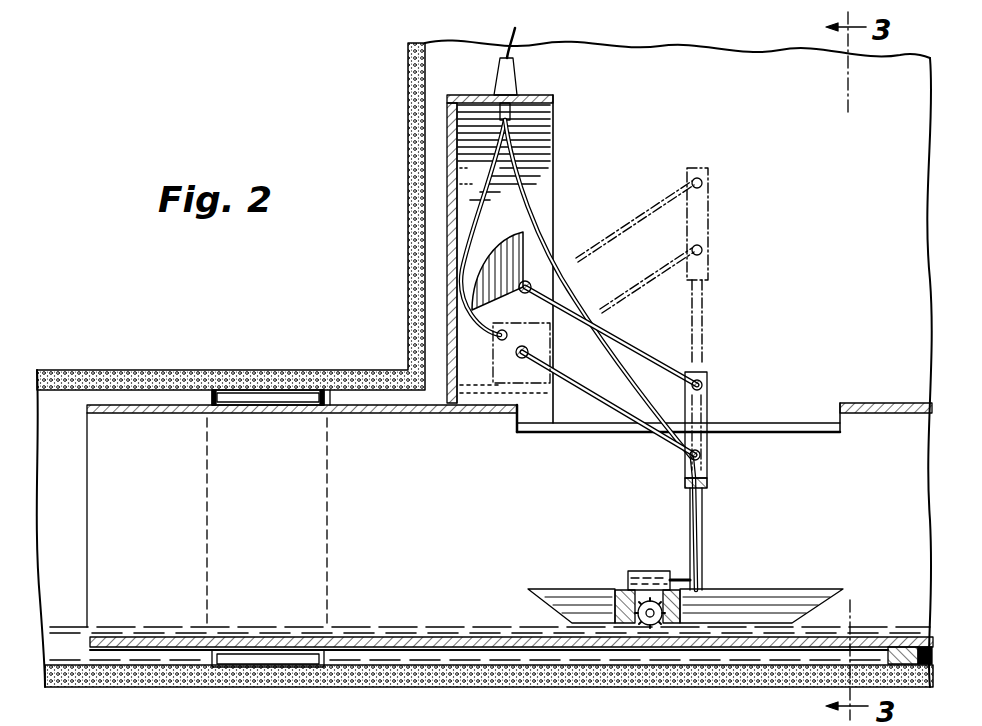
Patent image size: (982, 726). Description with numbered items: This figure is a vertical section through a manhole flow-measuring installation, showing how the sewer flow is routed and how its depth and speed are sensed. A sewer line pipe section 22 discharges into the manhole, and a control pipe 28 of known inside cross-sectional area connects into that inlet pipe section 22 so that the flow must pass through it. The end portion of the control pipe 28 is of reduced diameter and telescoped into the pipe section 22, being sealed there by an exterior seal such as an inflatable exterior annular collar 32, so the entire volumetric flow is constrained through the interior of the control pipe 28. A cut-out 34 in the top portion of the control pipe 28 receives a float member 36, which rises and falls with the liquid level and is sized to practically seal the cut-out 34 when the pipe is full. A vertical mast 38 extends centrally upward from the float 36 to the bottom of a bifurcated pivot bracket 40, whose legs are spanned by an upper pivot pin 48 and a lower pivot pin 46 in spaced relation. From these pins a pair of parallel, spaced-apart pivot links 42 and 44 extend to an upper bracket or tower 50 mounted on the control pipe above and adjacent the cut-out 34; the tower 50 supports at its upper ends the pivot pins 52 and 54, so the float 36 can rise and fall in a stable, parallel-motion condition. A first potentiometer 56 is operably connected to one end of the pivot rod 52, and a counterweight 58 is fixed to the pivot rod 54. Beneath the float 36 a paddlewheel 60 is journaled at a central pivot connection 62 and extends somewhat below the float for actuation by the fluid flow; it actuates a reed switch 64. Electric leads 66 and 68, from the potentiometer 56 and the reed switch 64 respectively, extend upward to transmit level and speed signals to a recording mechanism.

The sewer line pipe section 22 is at (248, 370).
The control pipe 28 is at (408, 514).
The inflatable exterior annular collar 32 is at (212, 400).
The cut-out 34 is at (798, 422).
The float member 36 is at (579, 585).
The vertical mast 38 is at (703, 545).
The pivot bracket 40 is at (708, 483).
The pivot link 42 is at (589, 399).
The pivot link 44 is at (657, 362).
The lower pivot pin 46 is at (701, 457).
The upper pivot pin 48 is at (704, 386).
The upper bracket or tower 50 is at (556, 196).
The pivot pin 52 is at (530, 351).
The pivot pin 54 is at (532, 287).
The first potentiometer 56 is at (536, 333).
The counterweight 58 is at (504, 242).
The paddlewheel 60 is at (633, 592).
The central pivot connection 62 is at (664, 606).
The reed switch 64 is at (650, 570).
The electric lead 66 is at (468, 229).
The electric lead 68 is at (541, 252).